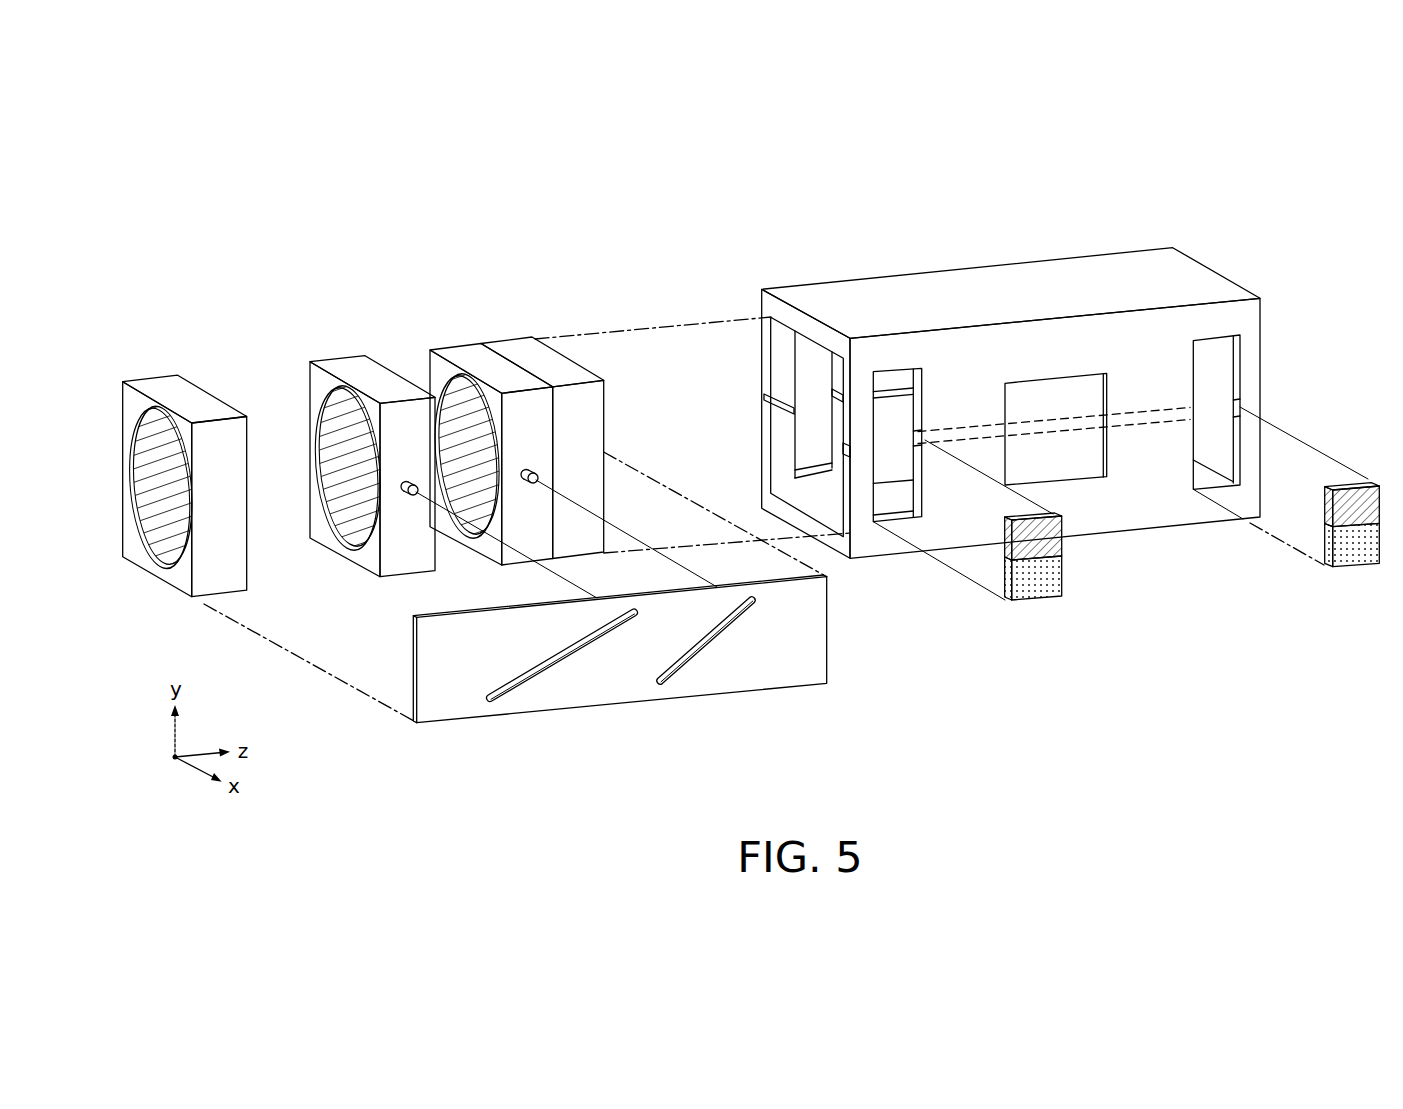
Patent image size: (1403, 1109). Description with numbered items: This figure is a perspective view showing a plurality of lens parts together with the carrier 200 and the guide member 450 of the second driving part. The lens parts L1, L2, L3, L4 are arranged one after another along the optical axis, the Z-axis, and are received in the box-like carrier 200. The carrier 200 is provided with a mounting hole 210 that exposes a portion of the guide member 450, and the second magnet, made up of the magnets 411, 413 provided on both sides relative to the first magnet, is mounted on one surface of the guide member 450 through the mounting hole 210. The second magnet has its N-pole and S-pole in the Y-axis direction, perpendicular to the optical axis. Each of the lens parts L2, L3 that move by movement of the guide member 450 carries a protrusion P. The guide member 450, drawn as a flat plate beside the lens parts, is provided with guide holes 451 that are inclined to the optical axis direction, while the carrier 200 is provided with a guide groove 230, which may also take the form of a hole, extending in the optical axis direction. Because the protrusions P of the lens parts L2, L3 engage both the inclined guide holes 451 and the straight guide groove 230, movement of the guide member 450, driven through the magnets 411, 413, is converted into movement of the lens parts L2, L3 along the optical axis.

The carrier 200 is at (1127, 263).
The mounting hole 210 is at (887, 449).
The guide groove 230 is at (963, 430).
The magnet 411 is at (1035, 588).
The magnet 413 is at (1343, 558).
The guide member 450 is at (792, 677).
The guide hole 451 is at (563, 660).
The lens part L1 is at (165, 381).
The lens part L2 is at (355, 362).
The lens part L3 is at (472, 350).
The lens part L4 is at (525, 348).
The protrusion P is at (406, 491).